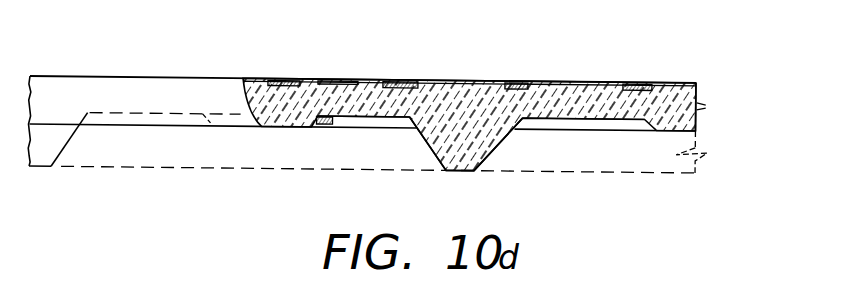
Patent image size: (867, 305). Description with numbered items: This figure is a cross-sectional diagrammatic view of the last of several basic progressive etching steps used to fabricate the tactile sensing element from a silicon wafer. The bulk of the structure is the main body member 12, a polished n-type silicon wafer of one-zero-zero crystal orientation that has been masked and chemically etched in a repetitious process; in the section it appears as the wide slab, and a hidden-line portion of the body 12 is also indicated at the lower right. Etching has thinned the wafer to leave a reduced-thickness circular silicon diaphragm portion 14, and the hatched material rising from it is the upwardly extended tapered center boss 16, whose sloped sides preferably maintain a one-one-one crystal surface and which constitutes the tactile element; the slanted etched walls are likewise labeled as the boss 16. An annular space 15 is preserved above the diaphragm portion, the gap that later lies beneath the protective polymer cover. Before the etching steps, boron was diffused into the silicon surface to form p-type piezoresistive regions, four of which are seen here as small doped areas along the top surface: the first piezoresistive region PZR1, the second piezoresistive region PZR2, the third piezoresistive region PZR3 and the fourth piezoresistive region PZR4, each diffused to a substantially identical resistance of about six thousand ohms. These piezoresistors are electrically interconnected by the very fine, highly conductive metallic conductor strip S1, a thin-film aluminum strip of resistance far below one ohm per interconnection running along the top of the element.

The main body member 12 is at (158, 76).
The diaphragm portion 14 is at (390, 113).
The annular space 15 is at (331, 121).
The tapered center boss 16 is at (66, 151).
The piezoresistive region PZR1 is at (281, 76).
The piezoresistive region PZR2 is at (402, 76).
The piezoresistive region PZR3 is at (525, 76).
The piezoresistive region PZR4 is at (640, 76).
The metallic conductor strip S1 is at (460, 76).